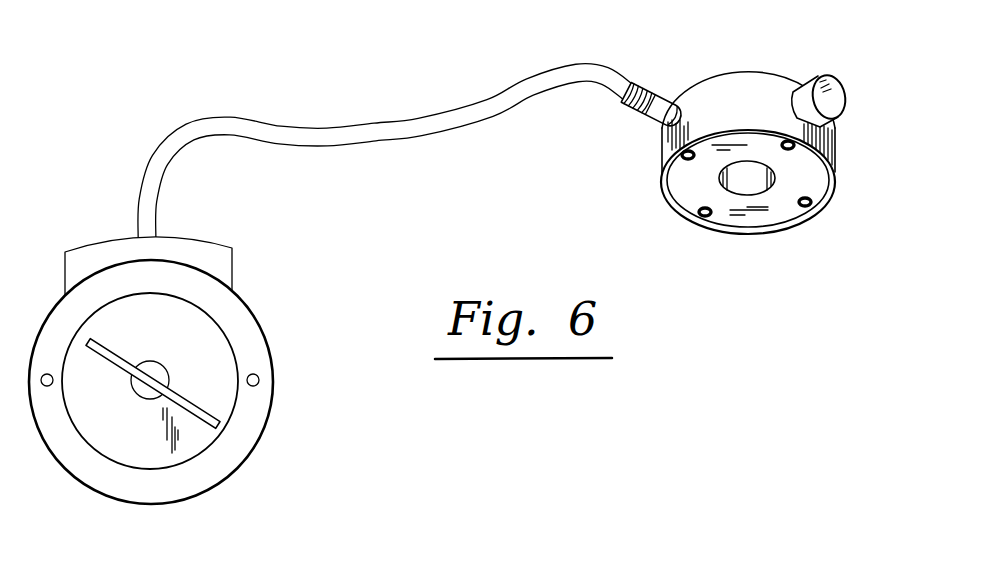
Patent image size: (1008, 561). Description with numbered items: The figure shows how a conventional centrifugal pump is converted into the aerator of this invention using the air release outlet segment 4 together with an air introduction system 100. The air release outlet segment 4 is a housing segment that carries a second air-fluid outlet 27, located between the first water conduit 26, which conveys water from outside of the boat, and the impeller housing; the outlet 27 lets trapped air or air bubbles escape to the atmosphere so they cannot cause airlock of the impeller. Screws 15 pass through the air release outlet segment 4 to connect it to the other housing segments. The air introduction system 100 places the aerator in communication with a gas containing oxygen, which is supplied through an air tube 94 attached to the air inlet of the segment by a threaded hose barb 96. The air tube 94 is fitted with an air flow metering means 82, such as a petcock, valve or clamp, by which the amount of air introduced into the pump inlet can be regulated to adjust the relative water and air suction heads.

The air introduction system 100 is at (295, 95).
The air tube 94 is at (577, 67).
The threaded hose barb 96 is at (653, 117).
The air release outlet segment 4 is at (840, 156).
The second air-fluid outlet 27 is at (838, 102).
The first water conduit 26 is at (775, 182).
The screws 15 is at (674, 172).
The air flow metering means 82 is at (257, 332).